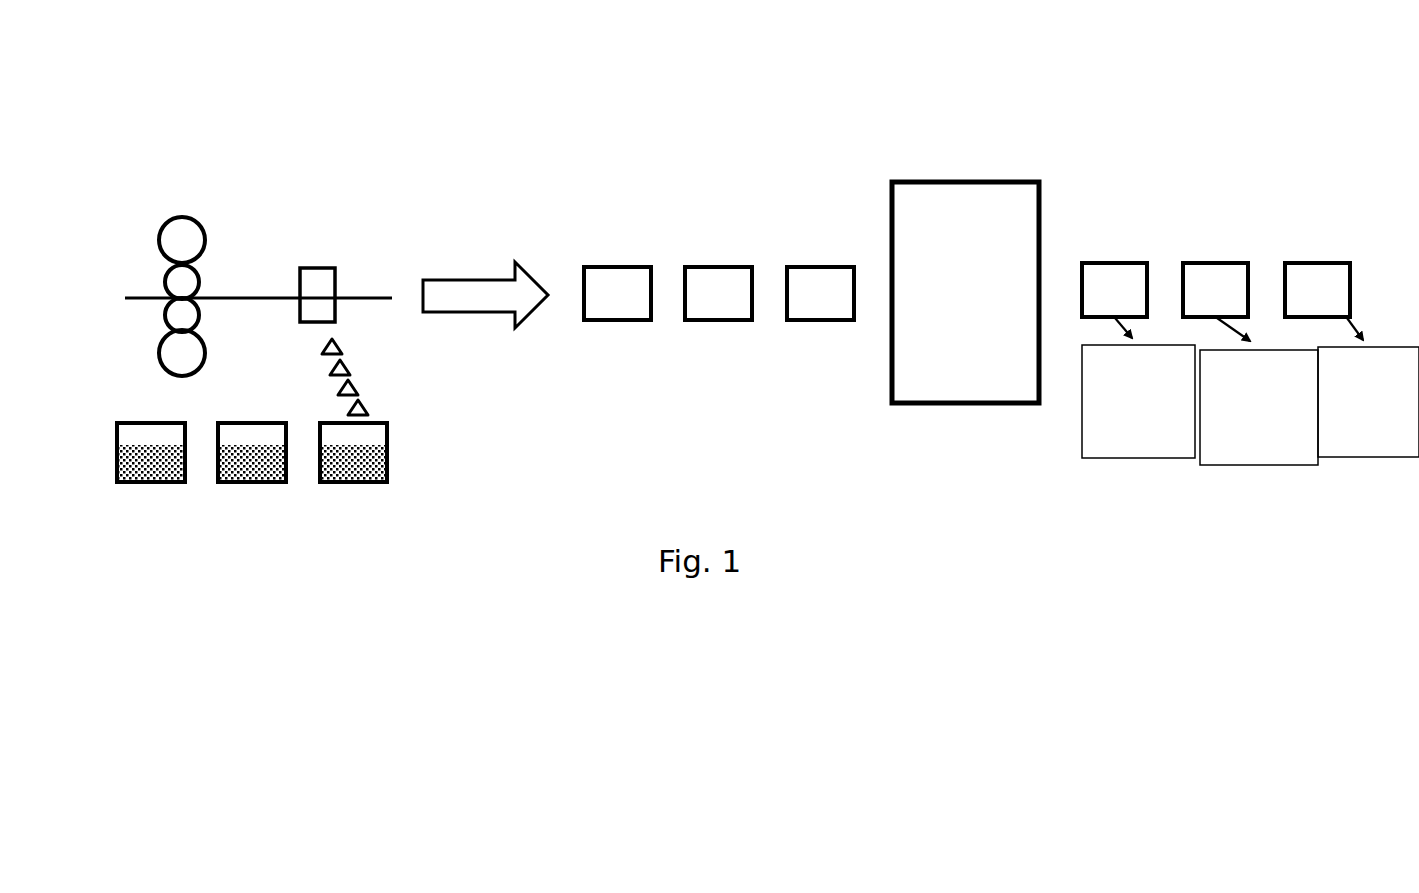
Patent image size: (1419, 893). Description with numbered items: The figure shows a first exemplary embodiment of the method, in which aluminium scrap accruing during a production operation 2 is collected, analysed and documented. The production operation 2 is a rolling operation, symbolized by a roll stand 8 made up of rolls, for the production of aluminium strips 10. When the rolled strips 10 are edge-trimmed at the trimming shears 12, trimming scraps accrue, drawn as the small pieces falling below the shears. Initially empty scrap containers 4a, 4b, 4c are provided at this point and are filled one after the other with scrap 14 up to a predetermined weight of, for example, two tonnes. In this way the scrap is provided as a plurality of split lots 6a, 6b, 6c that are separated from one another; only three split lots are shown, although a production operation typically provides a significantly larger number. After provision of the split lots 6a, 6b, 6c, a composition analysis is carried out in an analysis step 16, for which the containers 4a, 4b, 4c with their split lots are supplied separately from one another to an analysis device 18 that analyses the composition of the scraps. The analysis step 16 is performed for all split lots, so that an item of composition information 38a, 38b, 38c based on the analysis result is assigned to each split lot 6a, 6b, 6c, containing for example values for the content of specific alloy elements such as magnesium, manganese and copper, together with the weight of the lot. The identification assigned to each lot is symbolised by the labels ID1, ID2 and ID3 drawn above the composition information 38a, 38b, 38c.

The production operation 2 is at (263, 172).
The roll stand 8 is at (175, 204).
The aluminium strip 10 is at (238, 296).
The trimming shears 12 is at (317, 268).
The scrap 14 is at (345, 367).
The scrap container 4a is at (162, 477).
The scrap container 4b is at (264, 477).
The scrap container 4c is at (366, 477).
The split lot 6a is at (132, 468).
The split lot 6b is at (234, 468).
The split lot 6c is at (335, 468).
The analysis step 16 is at (942, 80).
The analysis device 18 is at (965, 292).
The item of composition information 38a is at (1117, 450).
The item of composition information 38b is at (1217, 459).
The item of composition information 38c is at (1338, 458).